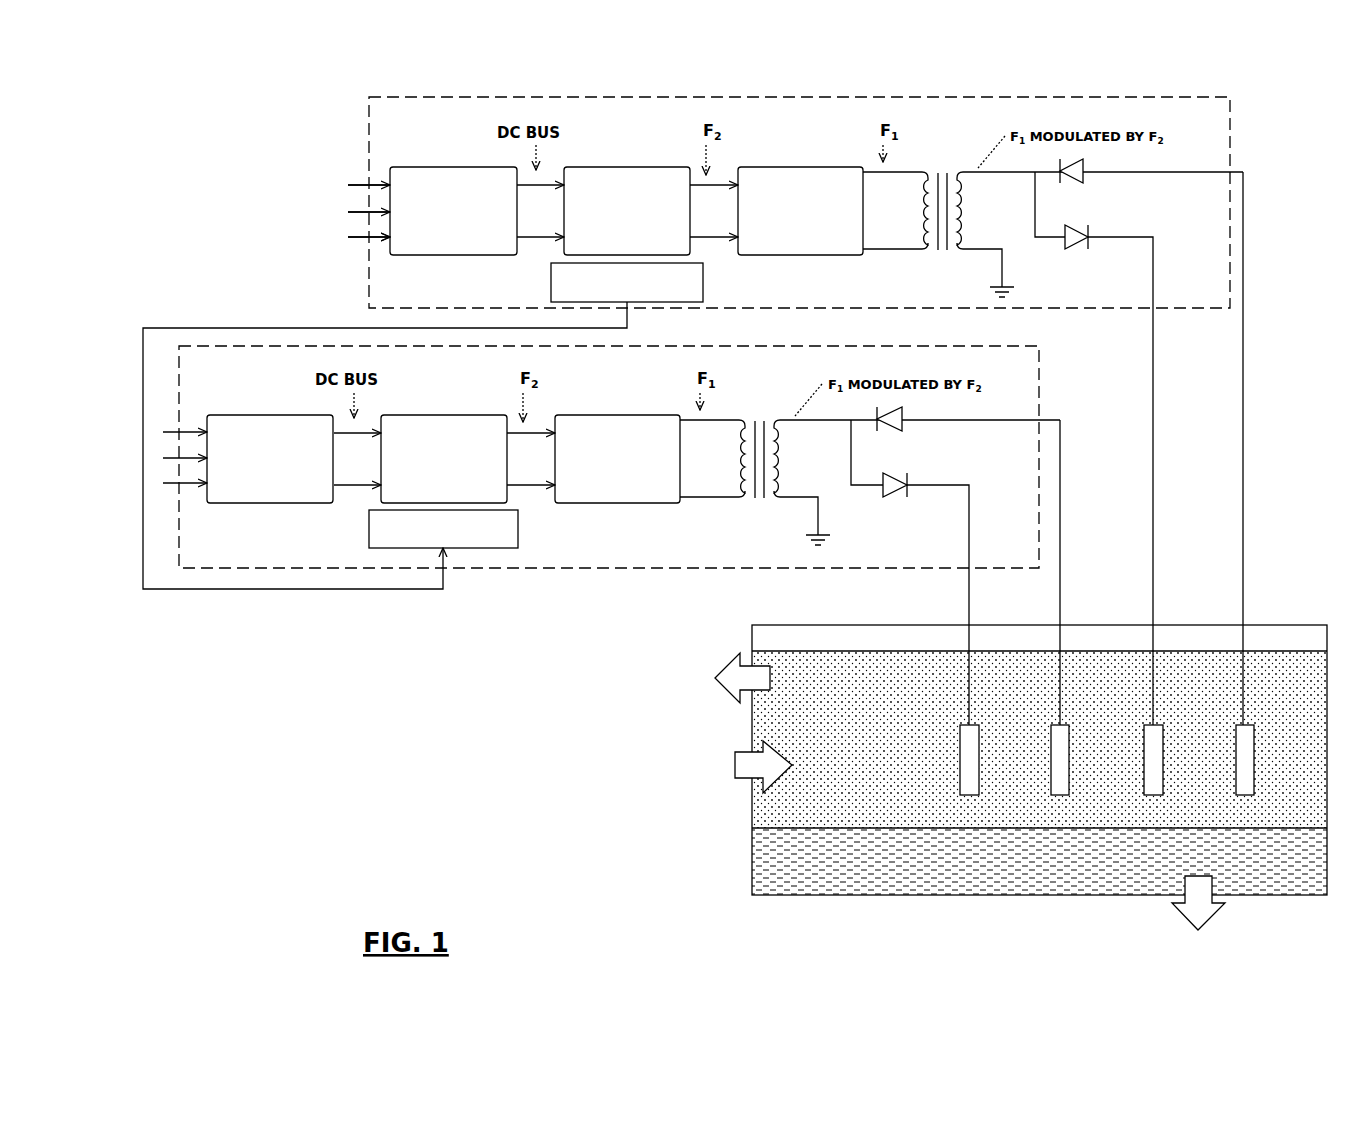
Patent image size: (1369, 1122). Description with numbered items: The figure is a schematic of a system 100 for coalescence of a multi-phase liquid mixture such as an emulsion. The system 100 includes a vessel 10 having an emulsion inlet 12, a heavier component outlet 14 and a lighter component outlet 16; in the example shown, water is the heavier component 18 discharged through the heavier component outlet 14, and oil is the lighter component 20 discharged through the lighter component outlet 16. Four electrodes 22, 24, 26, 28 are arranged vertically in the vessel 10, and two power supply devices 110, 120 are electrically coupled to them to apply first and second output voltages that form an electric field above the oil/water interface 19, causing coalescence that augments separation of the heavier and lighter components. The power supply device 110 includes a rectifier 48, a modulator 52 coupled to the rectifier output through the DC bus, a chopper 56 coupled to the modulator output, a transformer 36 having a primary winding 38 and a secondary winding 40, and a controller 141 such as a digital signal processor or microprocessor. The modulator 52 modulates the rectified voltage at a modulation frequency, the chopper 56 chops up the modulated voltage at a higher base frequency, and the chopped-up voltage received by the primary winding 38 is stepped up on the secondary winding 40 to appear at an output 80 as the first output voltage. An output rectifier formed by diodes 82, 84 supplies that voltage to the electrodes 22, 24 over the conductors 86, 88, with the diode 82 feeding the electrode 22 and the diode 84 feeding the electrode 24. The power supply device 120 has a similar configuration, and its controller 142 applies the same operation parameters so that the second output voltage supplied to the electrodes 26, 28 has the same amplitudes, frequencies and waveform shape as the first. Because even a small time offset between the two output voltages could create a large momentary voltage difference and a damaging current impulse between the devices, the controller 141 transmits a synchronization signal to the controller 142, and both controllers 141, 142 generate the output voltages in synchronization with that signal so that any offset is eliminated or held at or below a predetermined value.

The system 100 is at (272, 113).
The power supply device 110 is at (448, 97).
The power supply device 120 is at (588, 570).
The rectifier 48 is at (420, 166).
The modulator 52 is at (616, 165).
The chopper 56 is at (781, 166).
The controller 141 is at (551, 284).
The controller 142 is at (369, 531).
The transformer 36 is at (939, 168).
The primary winding 38 is at (920, 212).
The secondary winding 40 is at (968, 212).
The output 80 is at (1003, 176).
The diode 82 is at (1083, 180).
The diode 84 is at (1074, 250).
The first output conductor 86 is at (1245, 272).
The second output conductor 88 is at (1150, 314).
The vessel 10 is at (770, 625).
The emulsion inlet 12 is at (768, 782).
The heavier component outlet 14 is at (1210, 915).
The lighter component outlet 16 is at (770, 680).
The heavier component 18 is at (945, 840).
The oil/water interface 19 is at (780, 828).
The lighter component 20 is at (890, 650).
The electrode 22 is at (1253, 740).
The electrode 24 is at (1163, 740).
The electrode 26 is at (1063, 740).
The electrode 28 is at (975, 740).